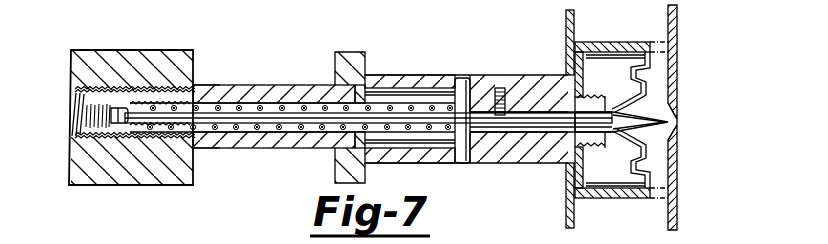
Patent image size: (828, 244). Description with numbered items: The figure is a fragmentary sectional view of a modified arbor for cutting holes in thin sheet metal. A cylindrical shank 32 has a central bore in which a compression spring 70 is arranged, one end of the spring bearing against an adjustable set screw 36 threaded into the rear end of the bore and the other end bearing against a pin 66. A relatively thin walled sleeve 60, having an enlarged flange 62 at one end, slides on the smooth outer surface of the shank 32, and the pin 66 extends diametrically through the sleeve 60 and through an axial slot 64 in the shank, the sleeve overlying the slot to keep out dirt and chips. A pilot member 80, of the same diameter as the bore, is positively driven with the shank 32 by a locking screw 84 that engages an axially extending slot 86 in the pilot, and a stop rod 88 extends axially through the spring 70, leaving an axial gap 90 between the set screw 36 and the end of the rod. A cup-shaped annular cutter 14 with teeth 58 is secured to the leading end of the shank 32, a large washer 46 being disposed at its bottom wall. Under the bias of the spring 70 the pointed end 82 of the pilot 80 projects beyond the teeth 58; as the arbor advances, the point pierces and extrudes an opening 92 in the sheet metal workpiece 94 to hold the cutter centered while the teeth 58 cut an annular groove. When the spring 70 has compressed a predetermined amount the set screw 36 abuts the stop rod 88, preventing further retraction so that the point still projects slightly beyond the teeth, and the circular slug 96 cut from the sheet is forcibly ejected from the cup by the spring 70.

The cup-shaped annular cutter 14 is at (617, 200).
The cylindrical shank 32 is at (280, 90).
The set screw 36 is at (101, 122).
The washer 46 is at (566, 218).
The teeth 58 is at (672, 52).
The sleeve 60 is at (410, 78).
The flange 62 is at (345, 58).
The slot 64 is at (437, 138).
The pin 66 is at (462, 80).
The compression spring 70 is at (207, 90).
The pilot member 80 is at (520, 123).
The pointed end 82 is at (645, 110).
The locking screw 84 is at (502, 88).
The slot 86 is at (533, 110).
The stop rod 88 is at (245, 118).
The axial gap 90 is at (123, 107).
The opening 92 is at (675, 122).
The sheet metal workpiece 94 is at (670, 215).
The circular slug 96 is at (676, 170).